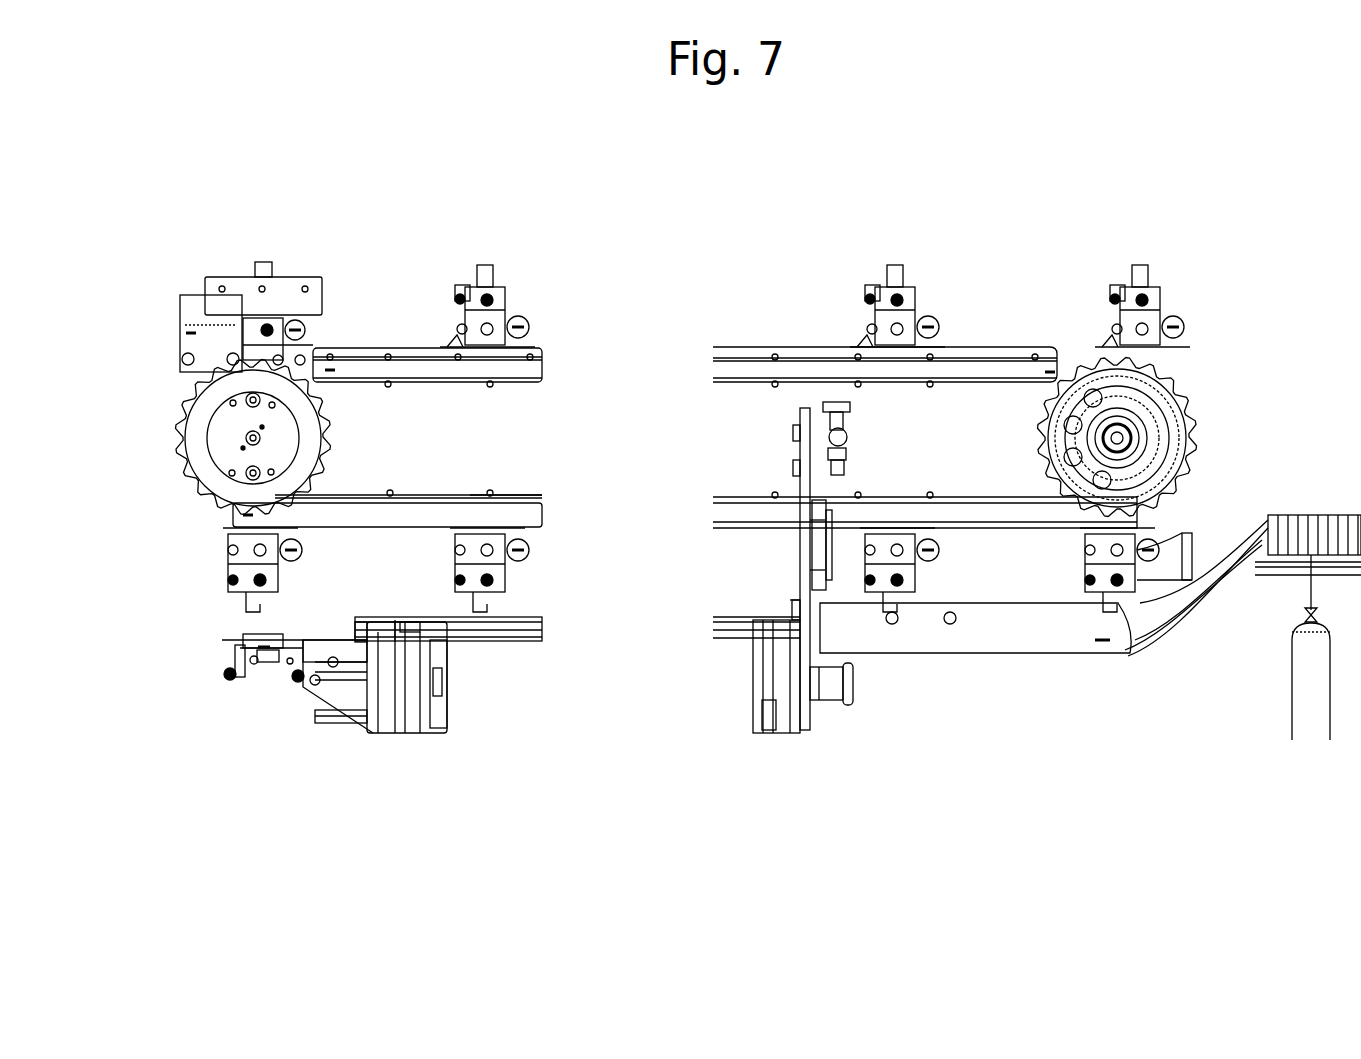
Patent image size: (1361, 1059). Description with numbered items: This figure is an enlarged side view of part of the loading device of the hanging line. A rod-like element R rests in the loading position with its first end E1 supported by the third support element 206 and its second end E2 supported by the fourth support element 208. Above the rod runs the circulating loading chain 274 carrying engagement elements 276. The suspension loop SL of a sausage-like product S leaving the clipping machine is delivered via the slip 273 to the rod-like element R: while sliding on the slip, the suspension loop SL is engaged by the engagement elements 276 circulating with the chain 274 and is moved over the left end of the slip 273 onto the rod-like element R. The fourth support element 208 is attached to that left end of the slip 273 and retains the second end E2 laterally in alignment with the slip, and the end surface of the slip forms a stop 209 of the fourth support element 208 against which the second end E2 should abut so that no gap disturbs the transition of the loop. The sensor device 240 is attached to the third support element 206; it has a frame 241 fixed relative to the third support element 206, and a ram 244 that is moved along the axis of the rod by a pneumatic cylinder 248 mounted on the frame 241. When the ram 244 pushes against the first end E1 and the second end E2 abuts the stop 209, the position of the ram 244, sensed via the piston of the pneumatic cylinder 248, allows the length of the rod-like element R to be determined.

The sensor device 240 is at (212, 800).
The frame 241 is at (315, 697).
The ram 244 is at (380, 622).
The pneumatic cylinder 248 is at (232, 655).
The third support element 206 is at (462, 648).
The fourth support element 208 is at (757, 603).
The stop 209 is at (793, 607).
The slip 273 is at (1045, 636).
The circulating loading chain 274 is at (735, 350).
The engagement elements 276 is at (898, 265).
The first end E1 is at (407, 620).
The second end E2 is at (792, 610).
The rod-like element R is at (528, 620).
The sausage-like product S is at (1290, 686).
The suspension loop SL is at (1305, 597).